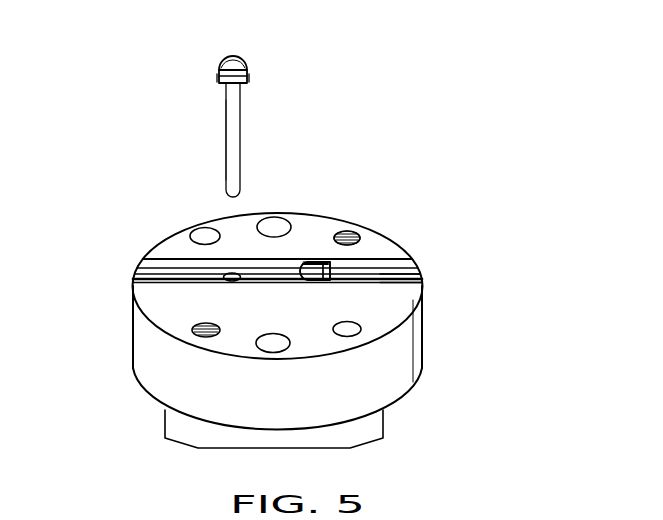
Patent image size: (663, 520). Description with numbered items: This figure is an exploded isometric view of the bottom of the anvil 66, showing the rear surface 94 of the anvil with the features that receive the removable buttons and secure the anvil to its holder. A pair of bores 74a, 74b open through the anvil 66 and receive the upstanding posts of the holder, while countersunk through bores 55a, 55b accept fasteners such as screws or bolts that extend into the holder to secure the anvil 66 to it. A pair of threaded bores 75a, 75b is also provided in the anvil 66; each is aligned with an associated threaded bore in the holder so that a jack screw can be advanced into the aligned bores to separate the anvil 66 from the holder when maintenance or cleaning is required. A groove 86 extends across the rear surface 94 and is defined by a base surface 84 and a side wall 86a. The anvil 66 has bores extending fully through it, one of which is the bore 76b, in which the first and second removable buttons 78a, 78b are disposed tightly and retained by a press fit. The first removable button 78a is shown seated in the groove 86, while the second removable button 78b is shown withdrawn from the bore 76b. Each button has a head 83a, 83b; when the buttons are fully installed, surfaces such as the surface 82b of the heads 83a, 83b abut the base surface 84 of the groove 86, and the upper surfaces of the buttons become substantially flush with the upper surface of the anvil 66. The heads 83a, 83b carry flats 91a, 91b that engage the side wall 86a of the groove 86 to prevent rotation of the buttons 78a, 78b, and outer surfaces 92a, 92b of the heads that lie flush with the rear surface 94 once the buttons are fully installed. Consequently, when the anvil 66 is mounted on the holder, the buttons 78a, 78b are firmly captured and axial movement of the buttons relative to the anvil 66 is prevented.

The countersunk through bore 55a is at (273, 343).
The countersunk through bore 55b is at (274, 224).
The anvil 66 is at (329, 261).
The bore 74a is at (352, 329).
The bore 74b is at (200, 233).
The threaded bore 75a is at (200, 331).
The threaded bore 75b is at (331, 265).
The bore 76b is at (140, 279).
The first removable button 78a is at (330, 272).
The second removable button 78b is at (232, 122).
The surface 82b is at (241, 84).
The head 83a is at (233, 62).
The head 83b is at (334, 268).
The base surface 84 is at (405, 275).
The groove 86 is at (418, 268).
The side wall 86a is at (400, 280).
The flat 91a is at (220, 75).
The flat 91b is at (194, 308).
The outer surface 92a is at (241, 63).
The outer surface 92b is at (312, 266).
The rear surface 94 is at (150, 299).